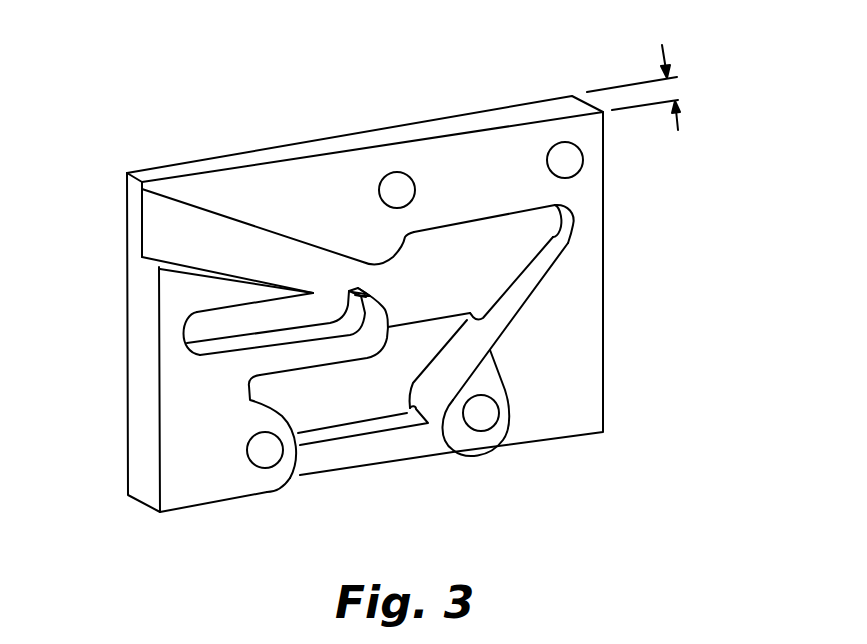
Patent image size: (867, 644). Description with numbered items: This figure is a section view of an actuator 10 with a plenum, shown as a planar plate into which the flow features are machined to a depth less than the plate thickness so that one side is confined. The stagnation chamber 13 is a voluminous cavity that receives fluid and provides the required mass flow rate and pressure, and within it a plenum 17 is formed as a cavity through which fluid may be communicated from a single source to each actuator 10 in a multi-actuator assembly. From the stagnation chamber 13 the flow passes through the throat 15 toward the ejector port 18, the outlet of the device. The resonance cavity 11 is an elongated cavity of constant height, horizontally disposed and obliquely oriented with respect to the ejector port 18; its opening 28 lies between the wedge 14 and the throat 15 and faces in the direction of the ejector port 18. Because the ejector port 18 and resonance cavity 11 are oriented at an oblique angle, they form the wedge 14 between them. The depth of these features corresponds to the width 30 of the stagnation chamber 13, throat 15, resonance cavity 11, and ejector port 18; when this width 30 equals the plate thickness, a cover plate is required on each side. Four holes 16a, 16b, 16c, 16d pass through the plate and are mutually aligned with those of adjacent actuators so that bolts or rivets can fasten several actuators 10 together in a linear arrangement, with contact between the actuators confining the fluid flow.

The actuator 10 is at (615, 193).
The resonance cavity 11 is at (225, 328).
The stagnation chamber 13 is at (527, 246).
The wedge 14 is at (203, 292).
The throat 15 is at (387, 256).
The hole 16a is at (567, 162).
The hole 16b is at (400, 188).
The hole 16c is at (265, 452).
The hole 16d is at (482, 415).
The plenum 17 is at (371, 397).
The ejector port 18 is at (215, 240).
The opening 28 is at (325, 288).
The width 30 is at (641, 107).